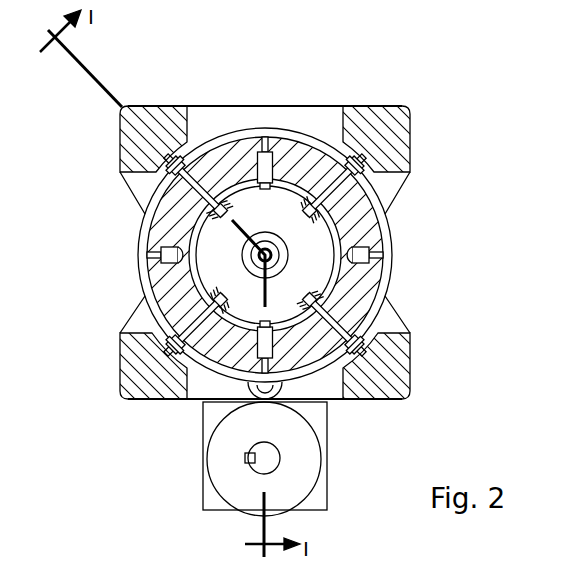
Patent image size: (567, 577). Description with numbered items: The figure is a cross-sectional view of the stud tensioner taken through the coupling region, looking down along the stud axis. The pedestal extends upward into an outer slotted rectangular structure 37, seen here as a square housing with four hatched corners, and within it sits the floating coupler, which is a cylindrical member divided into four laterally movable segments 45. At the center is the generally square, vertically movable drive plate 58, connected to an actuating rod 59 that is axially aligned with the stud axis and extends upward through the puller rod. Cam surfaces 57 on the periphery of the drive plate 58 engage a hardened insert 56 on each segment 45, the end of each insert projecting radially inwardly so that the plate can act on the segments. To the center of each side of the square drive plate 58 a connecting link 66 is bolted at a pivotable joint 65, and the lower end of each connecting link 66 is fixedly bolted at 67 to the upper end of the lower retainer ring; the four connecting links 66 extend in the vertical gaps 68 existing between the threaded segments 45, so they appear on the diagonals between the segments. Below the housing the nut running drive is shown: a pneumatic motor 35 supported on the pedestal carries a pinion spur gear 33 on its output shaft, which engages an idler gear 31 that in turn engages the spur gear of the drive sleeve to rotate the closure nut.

The idler gear 31 is at (330, 400).
The pinion spur gear 33 is at (305, 480).
The pneumatic motor 35 is at (318, 500).
The outer slotted rectangular structure 37 is at (146, 106).
The segments 45 is at (245, 150).
The hardened insert 56 is at (160, 258).
The cam surfaces 57 is at (373, 254).
The drive plate 58 is at (316, 243).
The actuating rod 59 is at (278, 258).
The pivotable joint 65 is at (388, 208).
The connecting link 66 is at (347, 160).
The bolted connection 67 is at (374, 176).
The vertical gaps 68 is at (214, 150).